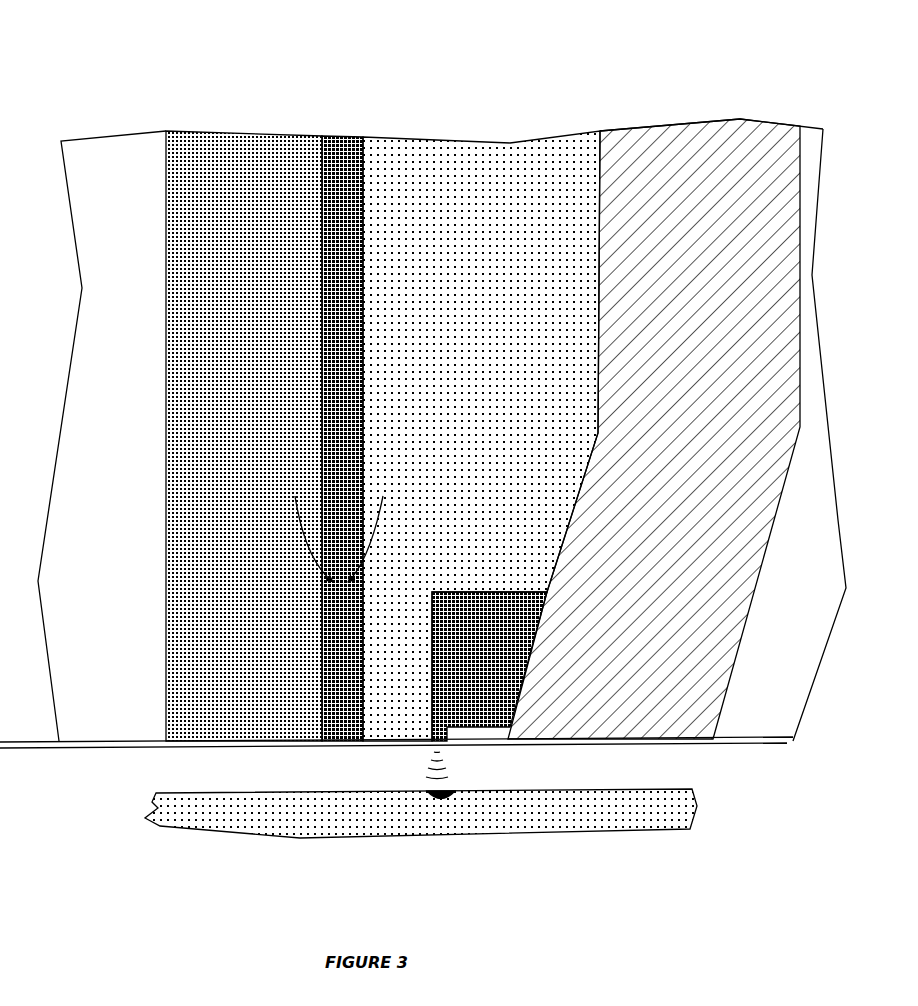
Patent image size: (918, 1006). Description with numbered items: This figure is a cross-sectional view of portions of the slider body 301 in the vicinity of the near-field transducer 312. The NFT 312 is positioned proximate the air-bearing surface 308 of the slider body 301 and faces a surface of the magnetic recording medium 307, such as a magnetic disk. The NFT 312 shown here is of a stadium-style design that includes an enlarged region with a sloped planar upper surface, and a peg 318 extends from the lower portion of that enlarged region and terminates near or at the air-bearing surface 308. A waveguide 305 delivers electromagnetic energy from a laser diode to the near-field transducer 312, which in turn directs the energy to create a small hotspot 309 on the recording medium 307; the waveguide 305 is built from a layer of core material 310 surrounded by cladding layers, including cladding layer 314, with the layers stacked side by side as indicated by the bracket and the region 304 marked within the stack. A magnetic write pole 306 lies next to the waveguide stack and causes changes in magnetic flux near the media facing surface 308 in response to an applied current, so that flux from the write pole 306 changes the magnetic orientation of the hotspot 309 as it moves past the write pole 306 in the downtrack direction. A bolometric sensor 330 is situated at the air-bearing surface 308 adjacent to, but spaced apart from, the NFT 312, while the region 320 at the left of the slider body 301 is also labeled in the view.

The slider body 301 is at (125, 65).
The gate region 304 is at (308, 515).
The waveguide 305 is at (425, 98).
The magnetic write pole 306 is at (640, 128).
The magnetic recording medium 307 is at (207, 818).
The air-bearing surface 308 is at (690, 742).
The hotspot 309 is at (438, 800).
The core material 310 is at (343, 135).
The near-field transducer 312 is at (387, 148).
The cladding layer 314 is at (190, 130).
The peg 318 is at (437, 742).
The isolation region 320 is at (108, 713).
The bolometric sensor 330 is at (430, 732).